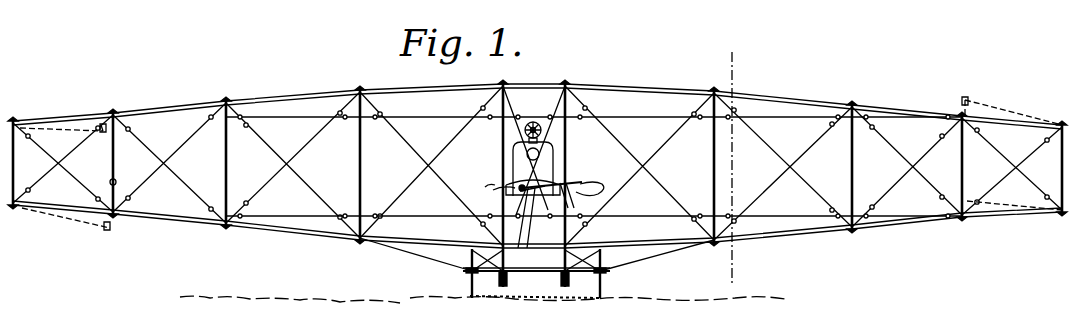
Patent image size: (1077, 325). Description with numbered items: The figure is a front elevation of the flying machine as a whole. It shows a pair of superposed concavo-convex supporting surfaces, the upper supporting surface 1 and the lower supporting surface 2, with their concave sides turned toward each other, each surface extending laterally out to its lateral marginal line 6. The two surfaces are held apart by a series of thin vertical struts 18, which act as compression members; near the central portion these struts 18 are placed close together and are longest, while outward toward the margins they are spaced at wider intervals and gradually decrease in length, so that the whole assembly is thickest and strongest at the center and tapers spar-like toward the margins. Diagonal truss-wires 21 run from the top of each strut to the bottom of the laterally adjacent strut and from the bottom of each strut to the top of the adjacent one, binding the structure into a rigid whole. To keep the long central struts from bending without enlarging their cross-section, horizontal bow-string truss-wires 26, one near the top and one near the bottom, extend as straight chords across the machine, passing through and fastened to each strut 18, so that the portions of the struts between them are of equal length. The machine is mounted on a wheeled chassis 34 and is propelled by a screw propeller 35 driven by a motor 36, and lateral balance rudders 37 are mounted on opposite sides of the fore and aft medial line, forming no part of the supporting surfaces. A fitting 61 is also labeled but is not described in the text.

The upper supporting surface 1 is at (794, 103).
The lower supporting surface 2 is at (818, 232).
The lateral marginal line 6 is at (745, 66).
The vertical struts 18 is at (112, 165).
The truss-wires 21 is at (316, 140).
The bow-string truss-wires 26 is at (437, 119).
The wheeled chassis 34 is at (547, 270).
The screw propeller 35 is at (592, 190).
The motor 36 is at (520, 172).
The lateral balance rudders 37 is at (66, 124).
The strut fitting 61 is at (108, 182).